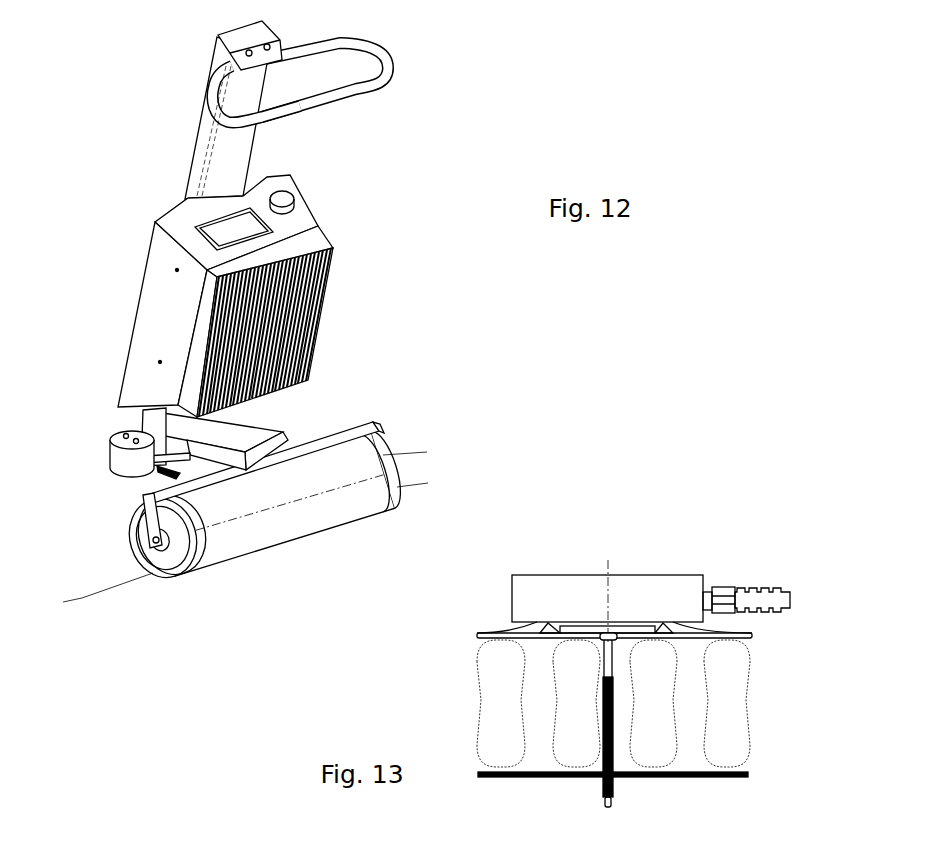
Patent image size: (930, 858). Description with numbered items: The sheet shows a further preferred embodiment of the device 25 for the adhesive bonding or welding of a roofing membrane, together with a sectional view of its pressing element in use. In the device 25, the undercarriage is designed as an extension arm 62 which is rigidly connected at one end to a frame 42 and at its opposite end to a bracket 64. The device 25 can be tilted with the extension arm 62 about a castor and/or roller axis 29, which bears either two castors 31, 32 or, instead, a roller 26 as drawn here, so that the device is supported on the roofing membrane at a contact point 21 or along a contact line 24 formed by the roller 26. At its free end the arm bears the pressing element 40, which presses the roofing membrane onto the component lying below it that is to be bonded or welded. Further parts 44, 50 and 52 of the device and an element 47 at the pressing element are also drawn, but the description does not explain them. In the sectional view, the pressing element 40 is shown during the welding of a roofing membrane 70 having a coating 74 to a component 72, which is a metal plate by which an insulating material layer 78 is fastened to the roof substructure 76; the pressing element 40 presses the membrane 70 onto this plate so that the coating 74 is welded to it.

In FIG. 12, the device 25 is at (118, 249).
In FIG. 12, the frame 42 is at (208, 138).
In FIG. 12, the handle 44 is at (390, 80).
In FIG. 12, the switch button 50 is at (298, 218).
In FIG. 12, the vent grille 52 is at (333, 283).
In FIG. 12, the extension arm 62 is at (243, 428).
In FIG. 12, the bracket 64 is at (355, 423).
In FIG. 12, the roller 26 is at (263, 540).
In FIG. 12, the contact point 21 is at (160, 580).
In FIG. 12, the castor 31 is at (133, 525).
In FIG. 12, the castor 32 is at (385, 457).
In FIG. 12, the contact line 24 is at (82, 598).
In FIG. 12, the castor and/or roller axis 29 is at (407, 458).
In FIG. 12, the pressing element 40 is at (117, 460).
In FIG. 13, the pressing element 40 is at (705, 575).
In FIG. 13, the cable connector 47 is at (762, 588).
In FIG. 13, the roofing membrane 70 is at (485, 632).
In FIG. 13, the component 72 is at (540, 642).
In FIG. 13, the coating 74 is at (710, 643).
In FIG. 13, the insulating material layer 78 is at (720, 705).
In FIG. 13, the roof substructure 76 is at (723, 778).